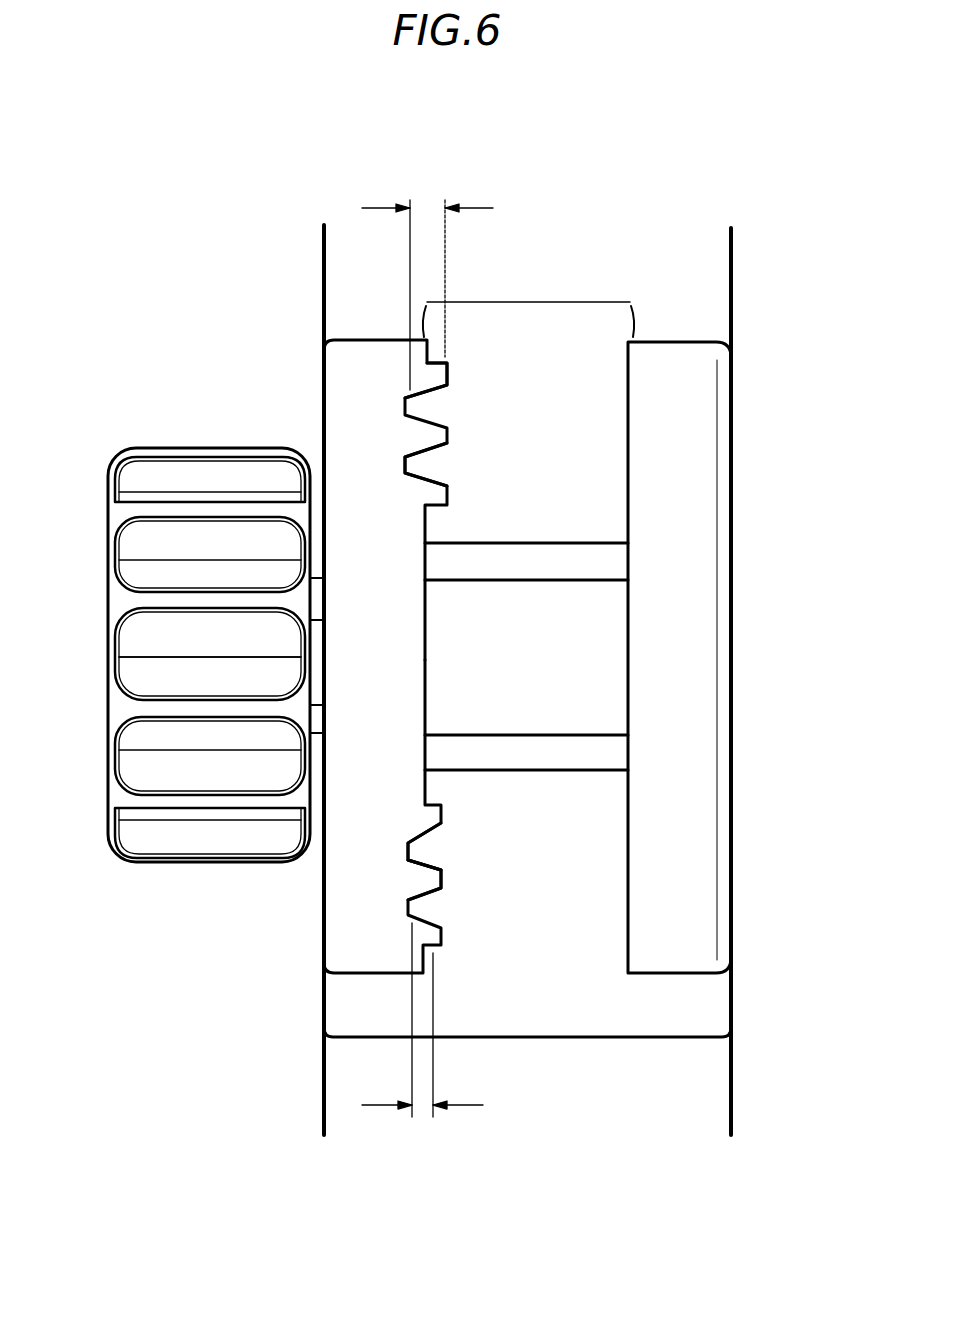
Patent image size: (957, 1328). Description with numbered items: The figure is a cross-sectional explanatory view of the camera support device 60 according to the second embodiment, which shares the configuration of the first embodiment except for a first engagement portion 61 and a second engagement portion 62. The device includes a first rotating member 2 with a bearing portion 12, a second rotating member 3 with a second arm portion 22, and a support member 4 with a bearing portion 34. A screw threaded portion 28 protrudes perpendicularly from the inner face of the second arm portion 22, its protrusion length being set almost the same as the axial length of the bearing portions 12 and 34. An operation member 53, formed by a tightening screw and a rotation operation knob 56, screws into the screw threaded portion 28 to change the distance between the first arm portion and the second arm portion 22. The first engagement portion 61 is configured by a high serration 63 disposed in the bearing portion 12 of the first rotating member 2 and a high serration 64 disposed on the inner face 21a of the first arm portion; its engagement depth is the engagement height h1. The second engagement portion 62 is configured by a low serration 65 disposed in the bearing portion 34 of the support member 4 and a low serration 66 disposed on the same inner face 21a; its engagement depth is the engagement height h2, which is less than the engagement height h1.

The camera support device 60 is at (779, 223).
The first rotating member 2 is at (571, 276).
The bearing portion 12 is at (525, 333).
The screw threaded portion 28 is at (565, 655).
The bearing portion 34 is at (560, 893).
The second rotating member 3 is at (765, 584).
The second arm portion 22 is at (692, 728).
The first engagement portion 61 is at (370, 379).
The second engagement portion 62 is at (383, 911).
The high serration 63 is at (402, 463).
The high serration 64 is at (447, 380).
The low serration 65 is at (405, 850).
The low serration 66 is at (443, 877).
The operation member 53 is at (135, 410).
The rotation operation knob 56 is at (130, 598).
The inner face 21a is at (425, 638).
The support member 4 is at (295, 1091).
The engagement height h1 is at (427, 281).
The engagement height h2 is at (422, 1033).